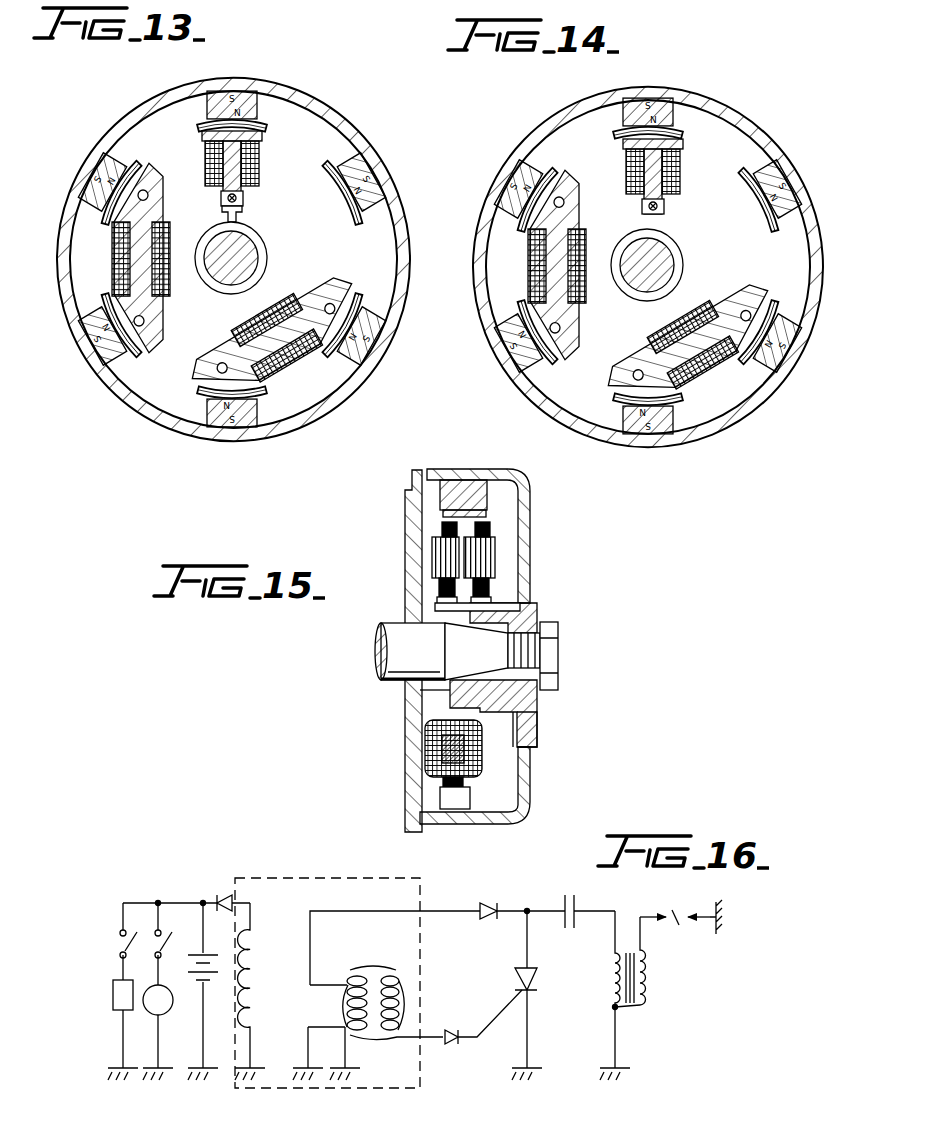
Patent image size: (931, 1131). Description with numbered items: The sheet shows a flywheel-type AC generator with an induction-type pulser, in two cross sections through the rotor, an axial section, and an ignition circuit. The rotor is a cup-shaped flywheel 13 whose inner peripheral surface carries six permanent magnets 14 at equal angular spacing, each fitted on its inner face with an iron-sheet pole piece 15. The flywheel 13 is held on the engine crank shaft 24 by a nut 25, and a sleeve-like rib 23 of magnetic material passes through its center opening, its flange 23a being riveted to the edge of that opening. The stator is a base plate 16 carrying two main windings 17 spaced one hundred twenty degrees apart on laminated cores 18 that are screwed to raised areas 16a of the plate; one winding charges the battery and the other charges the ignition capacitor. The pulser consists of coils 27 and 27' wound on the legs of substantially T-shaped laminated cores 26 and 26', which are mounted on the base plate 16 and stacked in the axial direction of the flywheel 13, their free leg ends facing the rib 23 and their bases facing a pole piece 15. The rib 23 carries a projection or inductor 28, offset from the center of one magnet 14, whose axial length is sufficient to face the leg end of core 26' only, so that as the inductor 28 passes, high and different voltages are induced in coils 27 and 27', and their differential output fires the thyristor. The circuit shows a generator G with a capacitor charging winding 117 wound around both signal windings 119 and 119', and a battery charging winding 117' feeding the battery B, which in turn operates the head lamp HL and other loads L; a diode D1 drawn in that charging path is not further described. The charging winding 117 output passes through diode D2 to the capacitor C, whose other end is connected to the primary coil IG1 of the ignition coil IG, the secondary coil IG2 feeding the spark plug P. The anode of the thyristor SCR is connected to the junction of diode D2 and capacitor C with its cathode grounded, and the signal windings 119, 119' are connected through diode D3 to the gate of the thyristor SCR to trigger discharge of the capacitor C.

In FIG. 13, the flywheel 13 is at (140, 109).
In FIG. 14, the flywheel 13 is at (648, 267).
In FIG. 15, the flywheel 13 is at (452, 863).
In FIG. 13, the permanent magnets 14 is at (257, 90).
In FIG. 14, the permanent magnets 14 is at (790, 180).
In FIG. 15, the permanent magnets 14 is at (440, 883).
In FIG. 13, the pole piece 15 is at (231, 54).
In FIG. 14, the pole piece 15 is at (650, 63).
In FIG. 15, the pole piece 15 is at (443, 513).
In FIG. 15, the base plate 16 is at (404, 780).
In FIG. 15, the raised areas 16a is at (451, 656).
In FIG. 13, the main winding 17 is at (168, 276).
In FIG. 14, the main winding 17 is at (582, 240).
In FIG. 15, the main winding 17 is at (483, 743).
In FIG. 13, the laminated cores 18 is at (210, 353).
In FIG. 14, the laminated cores 18 is at (630, 355).
In FIG. 15, the laminated cores 18 is at (467, 755).
In FIG. 13, the rib 23 is at (261, 250).
In FIG. 14, the rib 23 is at (680, 266).
In FIG. 15, the rib 23 is at (525, 693).
In FIG. 15, the flange 23a is at (537, 730).
In FIG. 13, the crank shaft 24 is at (218, 242).
In FIG. 14, the crank shaft 24 is at (672, 246).
In FIG. 15, the crank shaft 24 is at (383, 662).
In FIG. 15, the nut 25 is at (558, 656).
In FIG. 14, the laminated core 26 is at (673, 212).
In FIG. 15, the laminated core 26 is at (410, 596).
In FIG. 13, the laminated core 26' is at (259, 191).
In FIG. 15, the laminated core 26' is at (522, 582).
In FIG. 14, the pulser coil 27 is at (668, 176).
In FIG. 15, the pulser coil 27 is at (411, 559).
In FIG. 13, the pulser coil 27' is at (250, 168).
In FIG. 15, the pulser coil 27' is at (512, 559).
In FIG. 13, the inductor 28 is at (244, 215).
In FIG. 15, the inductor 28 is at (520, 607).
In FIG. 16, the loads L is at (123, 995).
In FIG. 16, the head lamp HL is at (172, 1005).
In FIG. 16, the battery B is at (207, 991).
In FIG. 16, the diode D1 is at (226, 890).
In FIG. 16, the diode D2 is at (490, 921).
In FIG. 16, the diode D3 is at (483, 1032).
In FIG. 16, the generator G is at (293, 877).
In FIG. 16, the capacitor charging winding 117 is at (396, 1020).
In FIG. 16, the battery charging winding 117' is at (274, 991).
In FIG. 16, the signal winding 119 is at (331, 1003).
In FIG. 16, the signal winding 119' is at (425, 1003).
In FIG. 16, the capacitor C is at (577, 925).
In FIG. 16, the thyristor SCR is at (538, 980).
In FIG. 16, the primary coil IG1 is at (611, 982).
In FIG. 16, the secondary coil IG2 is at (645, 983).
In FIG. 16, the ignition coil IG is at (625, 1007).
In FIG. 16, the spark plug P is at (681, 910).